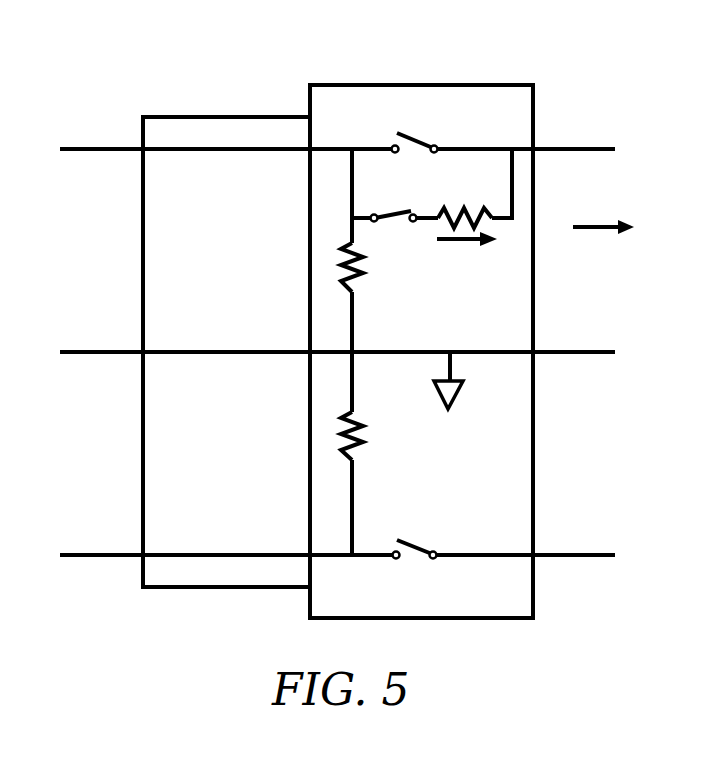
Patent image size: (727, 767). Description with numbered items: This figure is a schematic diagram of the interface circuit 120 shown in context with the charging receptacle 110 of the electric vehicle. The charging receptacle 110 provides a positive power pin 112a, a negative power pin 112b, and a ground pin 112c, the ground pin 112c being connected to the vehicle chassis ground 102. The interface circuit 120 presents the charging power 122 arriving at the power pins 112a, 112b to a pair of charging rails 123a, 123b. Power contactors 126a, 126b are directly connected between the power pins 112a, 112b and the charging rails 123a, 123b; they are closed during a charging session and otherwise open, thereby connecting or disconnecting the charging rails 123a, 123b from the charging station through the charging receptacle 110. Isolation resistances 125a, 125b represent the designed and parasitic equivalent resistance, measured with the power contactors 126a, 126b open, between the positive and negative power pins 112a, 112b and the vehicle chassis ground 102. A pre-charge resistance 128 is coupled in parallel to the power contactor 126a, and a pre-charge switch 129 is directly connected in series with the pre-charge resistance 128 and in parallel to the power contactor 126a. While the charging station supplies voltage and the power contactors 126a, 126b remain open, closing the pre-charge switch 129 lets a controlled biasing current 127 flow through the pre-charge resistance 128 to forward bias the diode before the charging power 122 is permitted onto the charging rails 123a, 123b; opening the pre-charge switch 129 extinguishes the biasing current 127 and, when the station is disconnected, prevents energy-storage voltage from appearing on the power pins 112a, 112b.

The charging receptacle 110 is at (268, 116).
The interface circuit 120 is at (352, 84).
The positive power pin 112a is at (217, 148).
The negative power pin 112b is at (200, 553).
The ground pin 112c is at (228, 350).
The positive charging rail 123a is at (578, 148).
The negative charging rail 123b is at (578, 554).
The charging power 122 is at (621, 218).
The isolation resistance 125a is at (345, 243).
The isolation resistance 125b is at (345, 458).
The power contactor 126a is at (416, 138).
The power contactor 126b is at (415, 545).
The biasing current 127 is at (486, 271).
The pre-charge resistance 128 is at (470, 212).
The pre-charge switch 129 is at (397, 222).
The vehicle chassis ground 102 is at (449, 406).